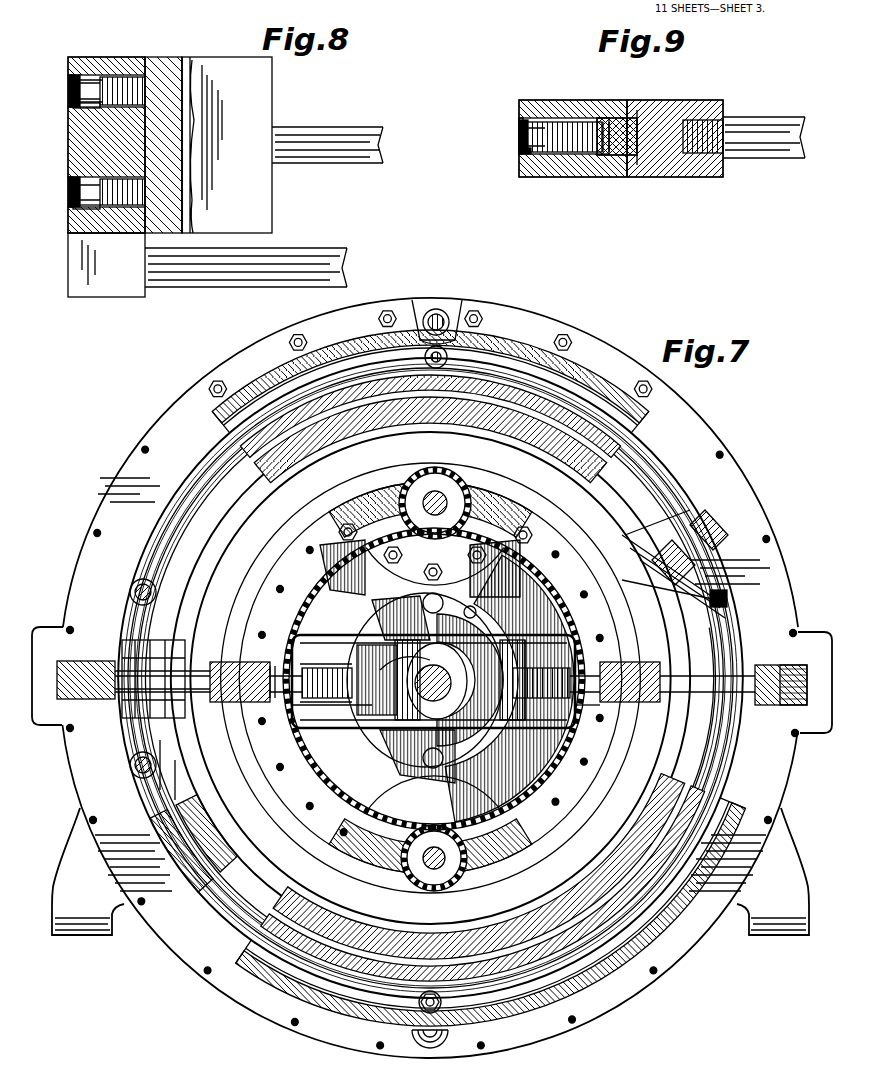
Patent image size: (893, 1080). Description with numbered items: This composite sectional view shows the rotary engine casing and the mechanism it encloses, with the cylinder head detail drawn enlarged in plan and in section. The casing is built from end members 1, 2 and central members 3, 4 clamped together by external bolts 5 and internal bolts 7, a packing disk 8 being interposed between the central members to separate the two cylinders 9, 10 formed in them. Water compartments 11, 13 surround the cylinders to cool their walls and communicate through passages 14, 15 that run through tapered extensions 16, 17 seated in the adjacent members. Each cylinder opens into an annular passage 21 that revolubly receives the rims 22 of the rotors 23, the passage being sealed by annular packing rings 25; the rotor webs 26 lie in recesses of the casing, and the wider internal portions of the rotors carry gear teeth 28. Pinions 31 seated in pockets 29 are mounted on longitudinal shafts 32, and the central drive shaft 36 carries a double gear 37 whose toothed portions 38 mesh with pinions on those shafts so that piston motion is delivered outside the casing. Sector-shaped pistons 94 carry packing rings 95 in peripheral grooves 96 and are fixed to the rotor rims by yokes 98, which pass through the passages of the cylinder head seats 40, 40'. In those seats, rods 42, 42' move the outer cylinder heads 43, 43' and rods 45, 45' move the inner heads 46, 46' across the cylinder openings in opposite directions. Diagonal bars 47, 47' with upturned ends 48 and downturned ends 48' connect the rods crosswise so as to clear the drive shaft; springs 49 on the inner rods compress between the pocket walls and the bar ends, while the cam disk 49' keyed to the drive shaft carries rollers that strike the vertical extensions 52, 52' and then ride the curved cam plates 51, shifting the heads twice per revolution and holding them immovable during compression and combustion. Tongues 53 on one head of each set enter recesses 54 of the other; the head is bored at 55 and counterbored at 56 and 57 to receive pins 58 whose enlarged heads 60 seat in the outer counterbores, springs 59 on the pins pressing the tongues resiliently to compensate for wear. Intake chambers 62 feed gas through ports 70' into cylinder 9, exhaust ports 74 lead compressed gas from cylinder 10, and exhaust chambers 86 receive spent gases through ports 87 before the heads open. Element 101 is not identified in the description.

In FIG. 7, the end member 1 is at (375, 818).
In FIG. 7, the end member 2 is at (730, 480).
In FIG. 7, the central casing member 3 is at (130, 476).
In FIG. 7, the central casing member 4 is at (322, 1040).
In FIG. 7, the external bolts 5 is at (93, 535).
In FIG. 7, the internal bolts 7 is at (280, 590).
In FIG. 7, the disk or ring 8 is at (482, 308).
In FIG. 7, the cylinder 9 is at (178, 762).
In FIG. 7, the cylinder 10 is at (712, 660).
In FIG. 7, the water compartment 11 is at (418, 1002).
In FIG. 7, the water compartment 13 is at (478, 678).
In FIG. 7, the passage 14 is at (448, 352).
In FIG. 7, the passage 15 is at (430, 308).
In FIG. 7, the tapered extension 16 is at (445, 362).
In FIG. 7, the tapered extension 17 is at (448, 310).
In FIG. 7, the annular passage 21 is at (205, 470).
In FIG. 7, the rotor rim 22 is at (200, 560).
In FIG. 7, the rotor 23 is at (330, 380).
In FIG. 7, the annular packing rings 25 is at (528, 980).
In FIG. 7, the rotor web 26 is at (455, 455).
In FIG. 7, the gear teeth 28 is at (372, 485).
In FIG. 7, the pocket 29 is at (358, 540).
In FIG. 7, the pinion 31 is at (392, 512).
In FIG. 7, the longitudinal shaft 32 is at (430, 490).
In FIG. 7, the drive shaft 36 is at (410, 700).
In FIG. 7, the double gear 37 is at (418, 687).
In FIG. 7, the toothed portion 38 is at (330, 585).
In FIG. 7, the cylinder head seat 40 is at (126, 687).
In FIG. 7, the cylinder head seat 40' is at (734, 667).
In FIG. 8, the cylinder head rod 42 is at (246, 250).
In FIG. 7, the cylinder head rod 42 is at (404, 737).
In FIG. 7, the cylinder head rod 42' is at (618, 722).
In FIG. 8, the outer cylinder head 43 is at (106, 265).
In FIG. 9, the outer cylinder head 43 is at (573, 149).
In FIG. 7, the outer cylinder head 43 is at (79, 670).
In FIG. 7, the outer cylinder head 43' is at (781, 694).
In FIG. 8, the inner head rod 45 is at (327, 131).
In FIG. 9, the inner head rod 45 is at (744, 126).
In FIG. 7, the inner head rod 45 is at (208, 700).
In FIG. 7, the inner head rod 45' is at (595, 703).
In FIG. 8, the inner cylinder head 46 is at (227, 145).
In FIG. 9, the inner cylinder head 46 is at (621, 149).
In FIG. 7, the inner cylinder head 46 is at (240, 671).
In FIG. 7, the inner cylinder head 46' is at (630, 671).
In FIG. 7, the diagonal bar 47 is at (425, 697).
In FIG. 7, the diagonal bar 47' is at (545, 665).
In FIG. 7, the bar ends 48 is at (436, 668).
In FIG. 7, the bar ends 48' is at (326, 690).
In FIG. 7, the spring 49 is at (433, 676).
In FIG. 7, the yoke 49' is at (391, 713).
In FIG. 7, the curved cam plate 51 is at (464, 612).
In FIG. 7, the vertical extension 52 is at (502, 682).
In FIG. 7, the vertical extension 52' is at (407, 594).
In FIG. 8, the tongue 53 is at (192, 62).
In FIG. 9, the tongue 53 is at (640, 118).
In FIG. 7, the tongue 53 is at (272, 664).
In FIG. 8, the recess 54 is at (170, 60).
In FIG. 9, the recess 54 is at (627, 170).
In FIG. 8, the bore 55 is at (95, 60).
In FIG. 9, the bore 55 is at (555, 120).
In FIG. 8, the outer counterbore 56 is at (70, 62).
In FIG. 9, the outer counterbore 56 is at (520, 112).
In FIG. 8, the inner counterbore 57 is at (150, 60).
In FIG. 9, the inner counterbore 57 is at (605, 118).
In FIG. 8, the pin 58 is at (85, 60).
In FIG. 9, the pin 58 is at (520, 152).
In FIG. 8, the spring 59 is at (110, 78).
In FIG. 9, the spring 59 is at (620, 120).
In FIG. 8, the pin head 60 is at (70, 90).
In FIG. 9, the pin head 60 is at (520, 125).
In FIG. 7, the intake chamber 62 is at (130, 590).
In FIG. 7, the ports 70' is at (124, 574).
In FIG. 7, the exhaust ports 74 is at (727, 592).
In FIG. 7, the exhaust chamber 86 is at (135, 778).
In FIG. 7, the ports 87 is at (128, 765).
In FIG. 7, the piston 94 is at (130, 640).
In FIG. 7, the piston packing rings 95 is at (125, 650).
In FIG. 7, the grooves 96 is at (150, 740).
In FIG. 7, the piston yoke 98 is at (130, 718).
In FIG. 7, the bar 101 is at (655, 588).